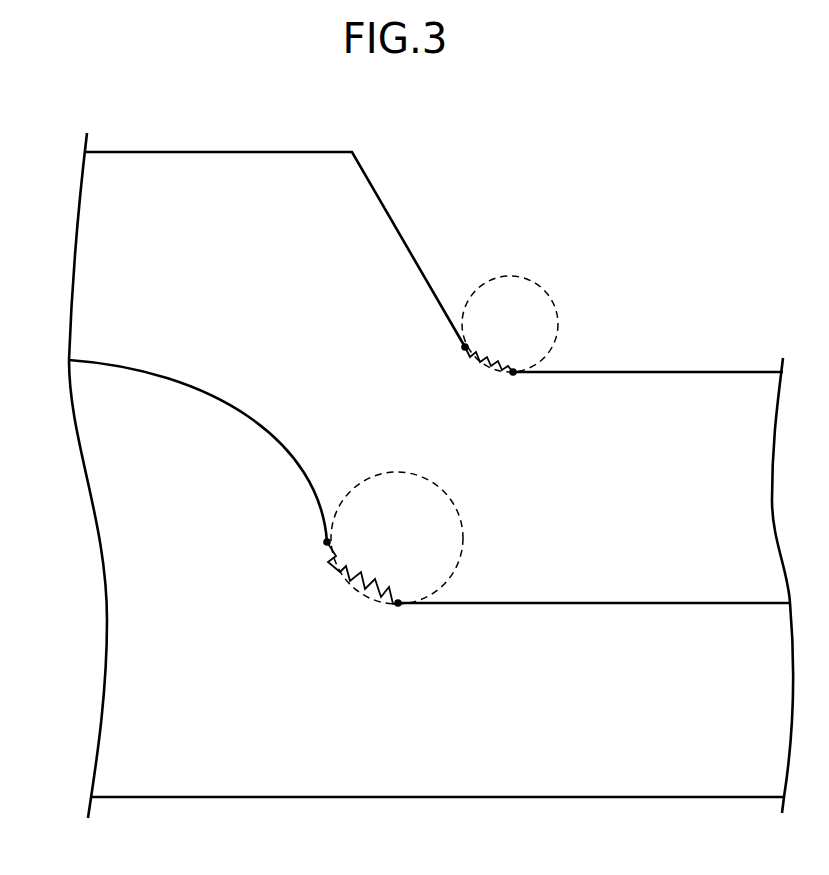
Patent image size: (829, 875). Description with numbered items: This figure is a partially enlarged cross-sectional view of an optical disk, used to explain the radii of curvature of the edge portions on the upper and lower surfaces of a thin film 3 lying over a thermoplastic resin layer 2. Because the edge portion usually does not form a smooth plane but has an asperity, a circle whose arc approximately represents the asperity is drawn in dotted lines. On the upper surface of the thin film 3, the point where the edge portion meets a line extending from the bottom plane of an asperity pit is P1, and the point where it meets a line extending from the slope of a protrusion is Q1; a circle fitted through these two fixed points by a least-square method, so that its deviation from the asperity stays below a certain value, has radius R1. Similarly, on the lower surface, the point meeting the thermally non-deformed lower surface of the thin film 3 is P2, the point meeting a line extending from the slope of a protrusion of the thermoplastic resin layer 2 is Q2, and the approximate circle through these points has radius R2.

The thermoplastic resin layer 2 is at (658, 622).
The thin film 3 is at (657, 390).
The point P1 is at (511, 387).
The point Q1 is at (453, 350).
The radius R1 is at (509, 329).
The point P2 is at (397, 618).
The point Q2 is at (311, 547).
The radius R2 is at (397, 543).